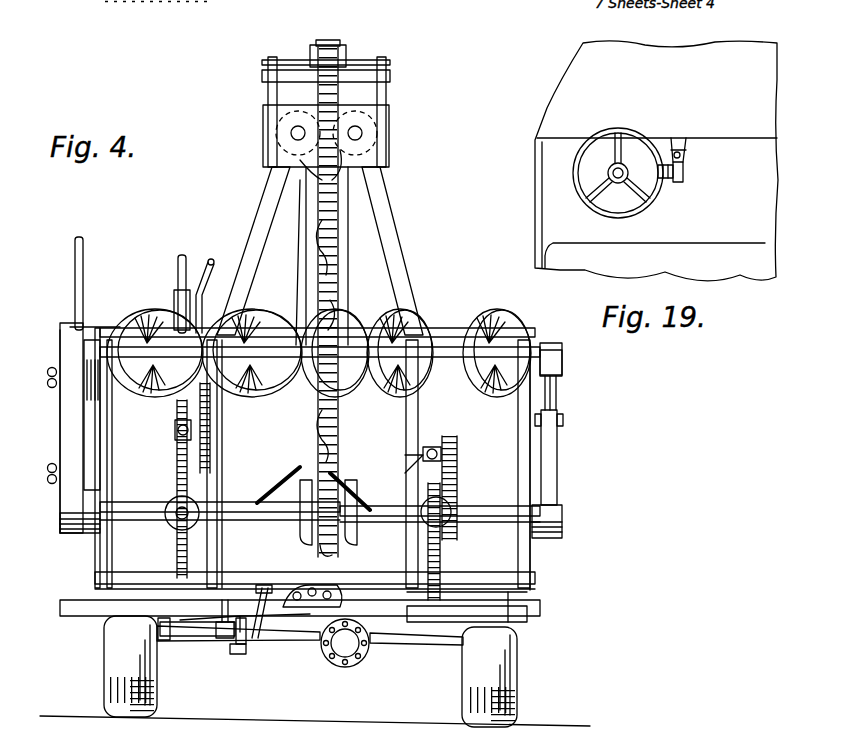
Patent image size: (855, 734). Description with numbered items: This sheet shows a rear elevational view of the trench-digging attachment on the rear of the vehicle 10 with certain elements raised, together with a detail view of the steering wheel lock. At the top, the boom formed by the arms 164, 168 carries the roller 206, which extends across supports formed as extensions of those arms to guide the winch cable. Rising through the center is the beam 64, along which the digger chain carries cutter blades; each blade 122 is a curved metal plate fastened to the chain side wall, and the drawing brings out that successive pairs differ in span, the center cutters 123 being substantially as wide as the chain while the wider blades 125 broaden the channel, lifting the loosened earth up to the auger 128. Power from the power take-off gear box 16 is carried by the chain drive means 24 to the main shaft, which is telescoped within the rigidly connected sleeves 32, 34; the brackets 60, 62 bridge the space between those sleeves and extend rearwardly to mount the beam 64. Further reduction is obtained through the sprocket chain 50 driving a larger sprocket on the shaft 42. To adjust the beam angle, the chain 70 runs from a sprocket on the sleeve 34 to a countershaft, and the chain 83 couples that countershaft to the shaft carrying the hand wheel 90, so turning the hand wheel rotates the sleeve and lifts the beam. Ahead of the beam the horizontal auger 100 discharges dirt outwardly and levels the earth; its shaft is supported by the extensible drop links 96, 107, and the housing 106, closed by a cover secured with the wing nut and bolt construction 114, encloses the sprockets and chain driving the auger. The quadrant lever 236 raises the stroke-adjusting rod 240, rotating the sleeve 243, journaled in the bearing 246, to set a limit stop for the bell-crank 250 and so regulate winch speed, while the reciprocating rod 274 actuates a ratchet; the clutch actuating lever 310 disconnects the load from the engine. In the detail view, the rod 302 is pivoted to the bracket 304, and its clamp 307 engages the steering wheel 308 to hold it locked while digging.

In FIG. 4, the roller 206 is at (372, 70).
In FIG. 4, the cutter blades 125 is at (334, 172).
In FIG. 4, the arm 168 is at (262, 208).
In FIG. 4, the arm 164 is at (390, 214).
In FIG. 4, the beam 64 is at (338, 249).
In FIG. 4, the cutter blades 123 is at (318, 258).
In FIG. 4, the blade 122 is at (338, 448).
In FIG. 4, the horizontal auger 100 is at (496, 323).
In FIG. 4, the auger 128 is at (477, 326).
In FIG. 4, the sleeve 34 is at (254, 524).
In FIG. 4, the sleeve 32 is at (373, 524).
In FIG. 4, the bracket 62 is at (280, 497).
In FIG. 4, the bracket 60 is at (352, 498).
In FIG. 4, the hand wheel 90 is at (84, 272).
In FIG. 4, the quadrant lever 236 is at (190, 262).
In FIG. 4, the clutch actuating lever 310 is at (226, 254).
In FIG. 4, the drop link 96 is at (88, 428).
In FIG. 4, the housing 106 is at (54, 434).
In FIG. 4, the wing nut and bolt construction 114 is at (41, 383).
In FIG. 4, the chain 70 is at (176, 481).
In FIG. 4, the chain 83 is at (176, 420).
In FIG. 4, the stroke-adjusting rod 240 is at (176, 546).
In FIG. 4, the shaft 42 is at (441, 445).
In FIG. 4, the sprocket chain 50 is at (458, 482).
In FIG. 4, the chain drive means 24 is at (446, 555).
In FIG. 4, the drop link 107 is at (558, 468).
In FIG. 4, the power take-off gear box 16 is at (312, 588).
In FIG. 4, the sleeve 243 is at (190, 638).
In FIG. 4, the bearing 246 is at (218, 640).
In FIG. 4, the bell-crank 250 is at (246, 650).
In FIG. 4, the reciprocating rod 274 is at (264, 588).
In FIG. 19, the vehicle 10 is at (552, 107).
In FIG. 19, the steering wheel 308 is at (650, 206).
In FIG. 19, the rod 302 is at (684, 169).
In FIG. 19, the bracket 304 is at (688, 150).
In FIG. 19, the clamp 307 is at (672, 180).